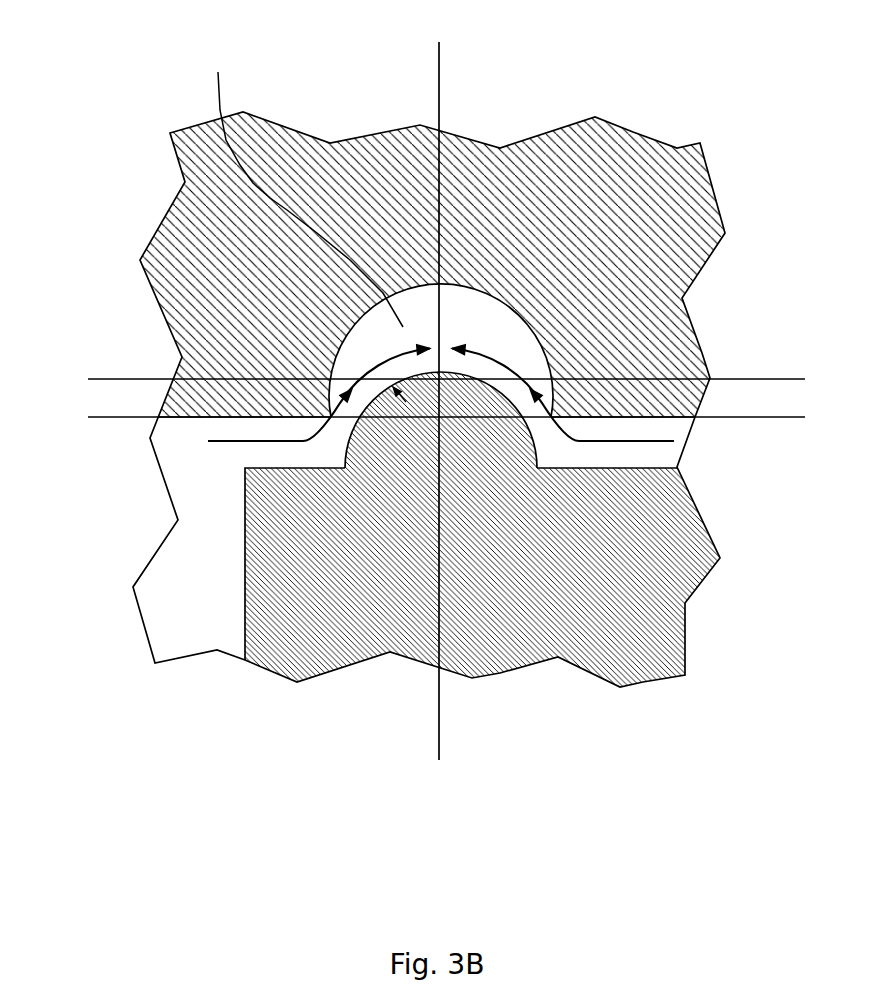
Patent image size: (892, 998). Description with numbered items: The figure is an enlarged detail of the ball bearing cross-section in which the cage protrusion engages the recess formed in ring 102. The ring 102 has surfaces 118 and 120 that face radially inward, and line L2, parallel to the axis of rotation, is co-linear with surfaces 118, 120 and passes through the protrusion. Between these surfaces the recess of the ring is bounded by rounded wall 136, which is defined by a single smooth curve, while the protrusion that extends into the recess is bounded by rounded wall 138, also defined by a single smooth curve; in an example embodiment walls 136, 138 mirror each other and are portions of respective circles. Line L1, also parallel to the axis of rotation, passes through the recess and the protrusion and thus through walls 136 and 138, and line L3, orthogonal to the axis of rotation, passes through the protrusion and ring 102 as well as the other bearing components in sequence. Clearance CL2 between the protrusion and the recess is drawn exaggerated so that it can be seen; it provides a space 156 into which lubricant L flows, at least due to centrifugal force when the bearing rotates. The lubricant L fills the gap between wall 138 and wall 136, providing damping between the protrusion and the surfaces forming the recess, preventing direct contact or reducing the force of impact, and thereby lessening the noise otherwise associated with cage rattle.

The ring 102 is at (635, 125).
The surface 118 is at (180, 418).
The surface 120 is at (647, 417).
The rounded wall 136 is at (301, 189).
The rounded wall 138 is at (382, 392).
The space 156 is at (447, 348).
The clearance CL2 is at (366, 354).
The lubricant L is at (235, 443).
The line L1 is at (109, 381).
The line L2 is at (109, 419).
The line L3 is at (437, 74).